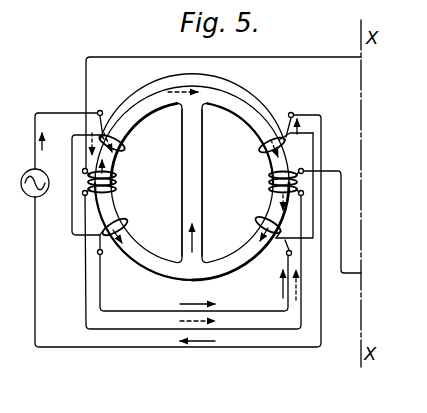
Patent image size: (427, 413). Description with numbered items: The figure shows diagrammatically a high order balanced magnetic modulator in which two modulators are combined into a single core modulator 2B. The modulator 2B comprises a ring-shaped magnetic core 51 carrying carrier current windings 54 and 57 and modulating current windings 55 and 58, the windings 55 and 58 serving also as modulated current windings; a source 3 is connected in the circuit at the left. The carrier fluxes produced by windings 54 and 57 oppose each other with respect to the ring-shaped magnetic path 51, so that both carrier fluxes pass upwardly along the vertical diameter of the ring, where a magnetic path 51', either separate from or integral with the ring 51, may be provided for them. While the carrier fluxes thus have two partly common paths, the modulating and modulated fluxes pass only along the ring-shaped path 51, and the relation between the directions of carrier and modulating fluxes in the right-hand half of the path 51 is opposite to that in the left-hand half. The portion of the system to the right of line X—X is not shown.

The single core modulator 2B is at (148, 128).
The alternating current source 3 is at (44, 194).
The ring-shaped magnetic core 51 is at (192, 100).
The magnetic path 51' is at (208, 183).
The carrier current winding 54 is at (263, 147).
The modulating current winding 55 is at (269, 180).
The carrier current winding 57 is at (117, 148).
The modulating current winding 58 is at (121, 178).